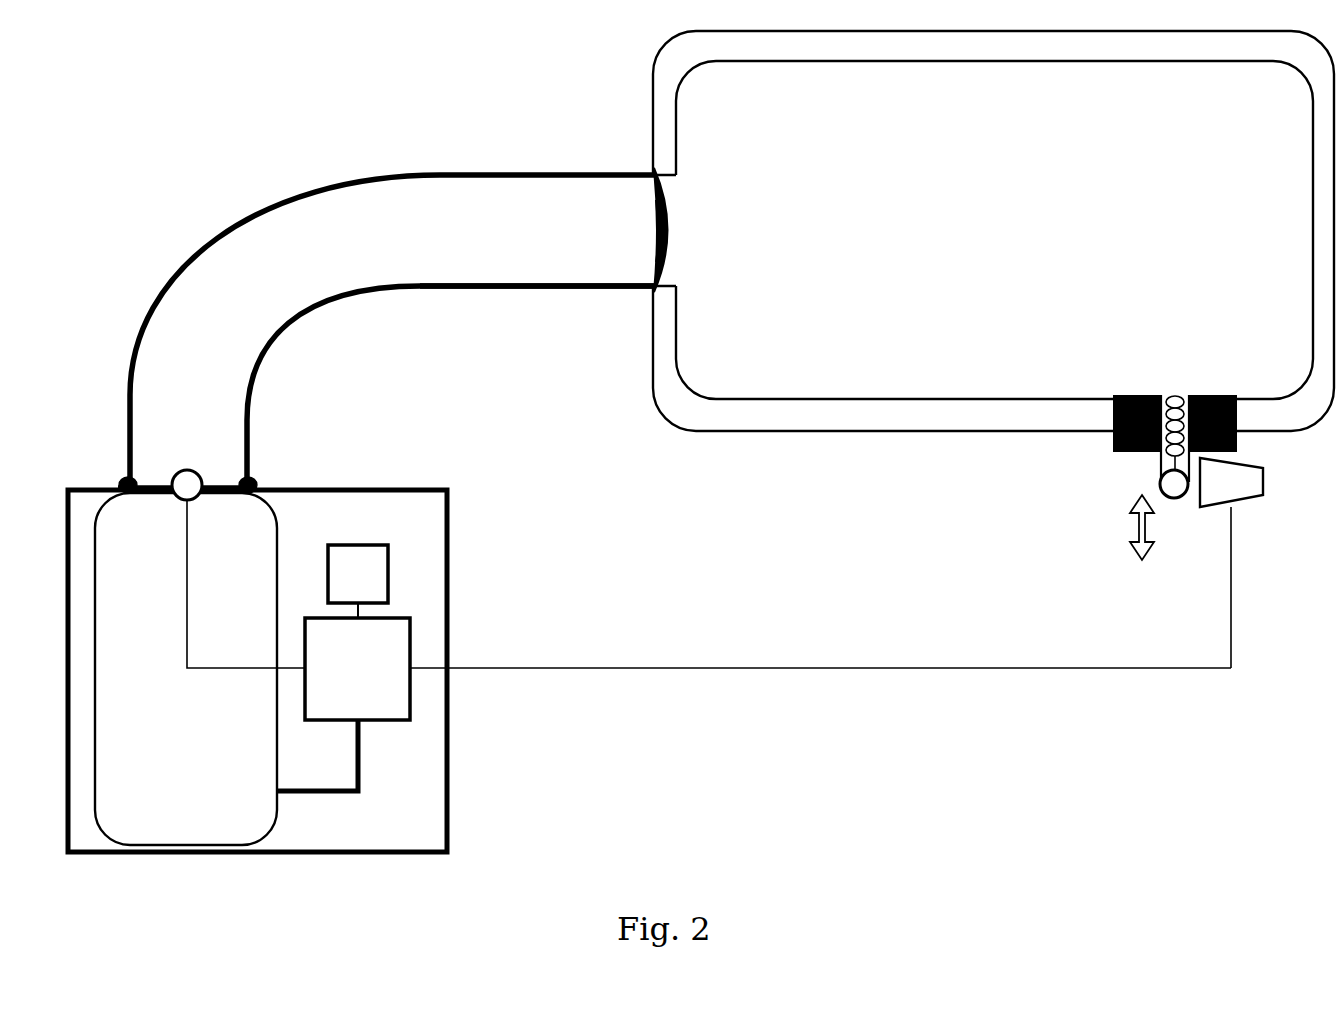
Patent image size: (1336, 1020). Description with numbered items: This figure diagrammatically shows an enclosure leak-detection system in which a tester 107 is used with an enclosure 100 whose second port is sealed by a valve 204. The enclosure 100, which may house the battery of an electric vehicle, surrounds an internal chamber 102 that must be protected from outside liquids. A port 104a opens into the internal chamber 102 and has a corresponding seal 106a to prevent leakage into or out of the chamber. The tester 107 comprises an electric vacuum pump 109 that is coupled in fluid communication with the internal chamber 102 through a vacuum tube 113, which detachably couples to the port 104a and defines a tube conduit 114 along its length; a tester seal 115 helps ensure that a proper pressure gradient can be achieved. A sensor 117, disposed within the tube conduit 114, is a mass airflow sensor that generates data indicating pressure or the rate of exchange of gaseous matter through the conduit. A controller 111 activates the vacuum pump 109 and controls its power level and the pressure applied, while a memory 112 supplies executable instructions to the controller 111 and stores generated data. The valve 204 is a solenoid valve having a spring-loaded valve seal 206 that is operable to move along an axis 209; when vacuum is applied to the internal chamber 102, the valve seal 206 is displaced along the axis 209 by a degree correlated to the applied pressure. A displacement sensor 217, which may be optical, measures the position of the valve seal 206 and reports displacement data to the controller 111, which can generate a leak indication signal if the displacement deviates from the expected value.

The enclosure 100 is at (668, 113).
The internal chamber 102 is at (983, 230).
The port 104a is at (686, 226).
The seal 106a is at (667, 253).
The tester 107 is at (257, 671).
The vacuum pump 109 is at (226, 669).
The controller 111 is at (768, 669).
The memory 112 is at (358, 581).
The vacuum tube 113 is at (476, 284).
The tube conduit 114 is at (392, 330).
The tester seal 115 is at (255, 485).
The sensor 117 is at (173, 480).
The valve 204 is at (1158, 456).
The valve seal 206 is at (1173, 498).
The axis 209 is at (1130, 528).
The displacement sensor 217 is at (1231, 563).